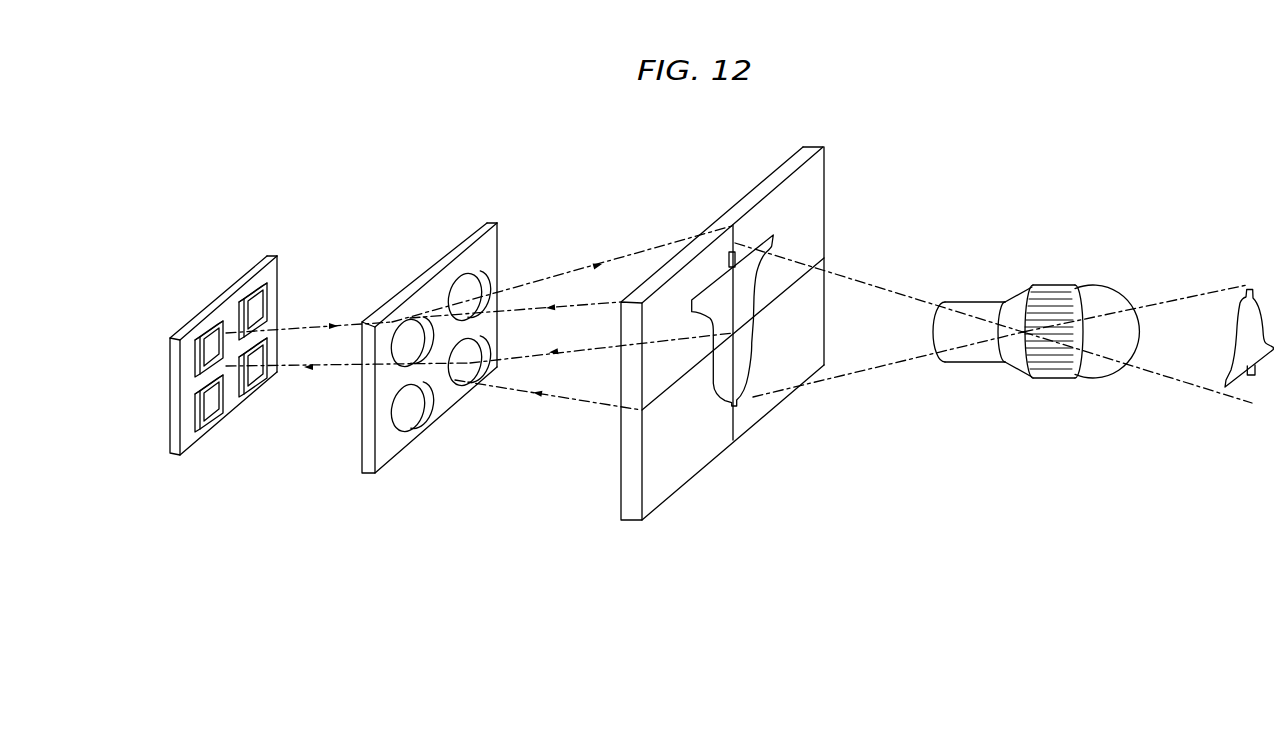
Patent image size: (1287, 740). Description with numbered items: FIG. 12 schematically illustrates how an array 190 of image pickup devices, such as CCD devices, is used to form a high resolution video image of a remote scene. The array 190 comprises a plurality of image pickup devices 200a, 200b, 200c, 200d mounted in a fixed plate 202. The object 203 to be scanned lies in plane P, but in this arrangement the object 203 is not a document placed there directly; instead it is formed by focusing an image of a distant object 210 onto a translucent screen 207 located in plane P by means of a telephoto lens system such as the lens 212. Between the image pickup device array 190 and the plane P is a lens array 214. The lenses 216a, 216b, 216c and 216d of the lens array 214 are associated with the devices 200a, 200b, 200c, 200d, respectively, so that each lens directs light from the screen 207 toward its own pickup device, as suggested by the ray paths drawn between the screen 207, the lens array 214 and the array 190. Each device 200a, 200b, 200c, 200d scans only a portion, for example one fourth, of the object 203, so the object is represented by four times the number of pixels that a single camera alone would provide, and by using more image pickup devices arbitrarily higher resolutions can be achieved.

The array of image pickup devices 190 is at (245, 349).
The fixed plate 202 is at (272, 272).
The image pickup device 200a is at (212, 328).
The image pickup device 200b is at (257, 289).
The image pickup device 200c is at (222, 417).
The image pickup device 200d is at (267, 347).
The lens array 214 is at (443, 348).
The lens 216a is at (408, 330).
The lens 216b is at (478, 279).
The lens 216c is at (408, 420).
The lens 216d is at (474, 347).
The object 203 is at (722, 333).
The translucent screen 207 is at (690, 455).
The lens 212 is at (1056, 392).
The distant object 210 is at (1272, 380).